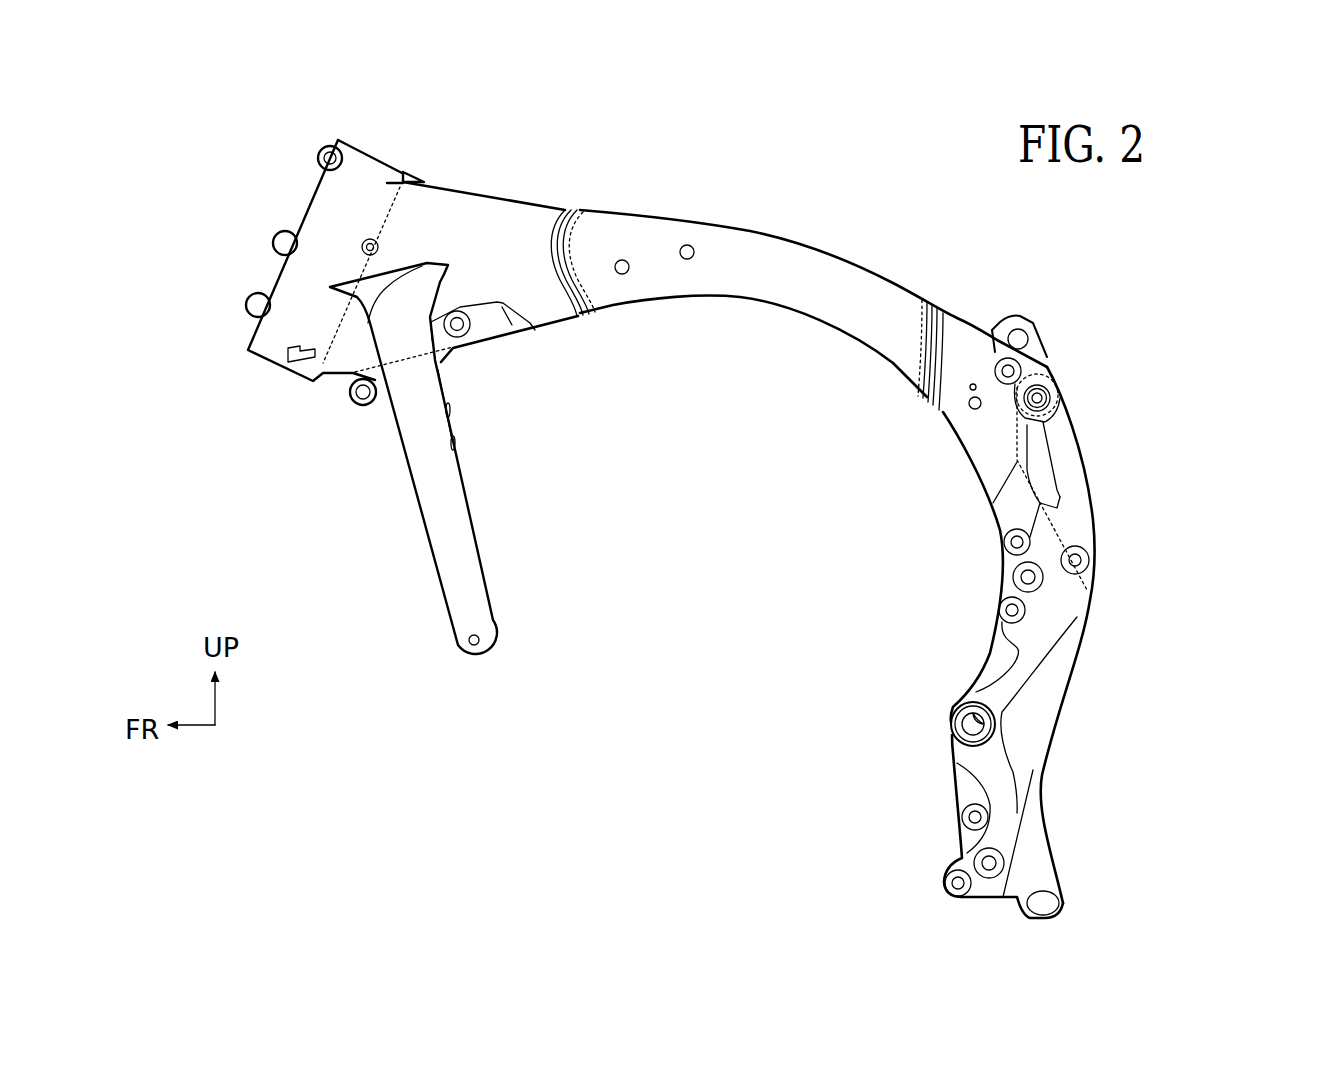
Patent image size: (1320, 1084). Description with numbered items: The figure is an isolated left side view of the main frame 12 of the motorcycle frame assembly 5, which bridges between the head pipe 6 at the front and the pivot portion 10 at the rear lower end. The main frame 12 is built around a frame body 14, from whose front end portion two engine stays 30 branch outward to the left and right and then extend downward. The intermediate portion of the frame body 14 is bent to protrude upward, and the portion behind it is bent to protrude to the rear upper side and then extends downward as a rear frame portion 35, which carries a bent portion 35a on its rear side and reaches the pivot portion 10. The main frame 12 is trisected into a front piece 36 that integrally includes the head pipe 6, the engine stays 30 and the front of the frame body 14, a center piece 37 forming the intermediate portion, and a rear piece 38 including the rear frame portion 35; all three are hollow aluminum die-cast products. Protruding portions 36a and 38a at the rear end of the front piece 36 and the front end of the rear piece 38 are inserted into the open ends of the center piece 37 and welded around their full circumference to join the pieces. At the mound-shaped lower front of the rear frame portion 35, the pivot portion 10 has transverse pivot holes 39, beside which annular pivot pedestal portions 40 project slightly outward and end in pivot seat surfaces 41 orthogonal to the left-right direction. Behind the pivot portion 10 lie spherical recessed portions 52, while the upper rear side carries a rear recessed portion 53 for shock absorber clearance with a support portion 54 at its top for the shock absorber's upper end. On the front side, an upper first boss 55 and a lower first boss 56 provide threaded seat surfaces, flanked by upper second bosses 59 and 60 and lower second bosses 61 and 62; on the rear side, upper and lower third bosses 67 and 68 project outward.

The frame assembly 5 is at (837, 509).
The head pipe 6 is at (320, 213).
The pivot portion 10 is at (947, 731).
The main frame 12 is at (792, 180).
The frame body 14 is at (680, 212).
The engine stays 30 is at (432, 502).
The rear frame portion 35 is at (1054, 601).
The bent portion 35a is at (1049, 364).
The front piece 36 is at (480, 183).
The protruding portion 36a is at (570, 257).
The center piece 37 is at (736, 207).
The rear piece 38 is at (1113, 466).
The protruding portion 38a is at (922, 322).
The pivot holes 39 is at (973, 725).
The pivot pedestal portions 40 is at (1071, 749).
The pivot seat surfaces 41 is at (990, 727).
The recessed portions 52 is at (1040, 700).
The rear recessed portion 53 is at (1058, 423).
The support portion 54 is at (1049, 387).
The upper first boss 55 is at (1013, 577).
The lower first boss 56 is at (975, 860).
The upper second boss 59 is at (1003, 540).
The upper second boss 60 is at (999, 608).
The lower second boss 61 is at (962, 817).
The lower second boss 62 is at (950, 891).
The upper third boss 67 is at (1000, 358).
The lower third boss 68 is at (1088, 560).